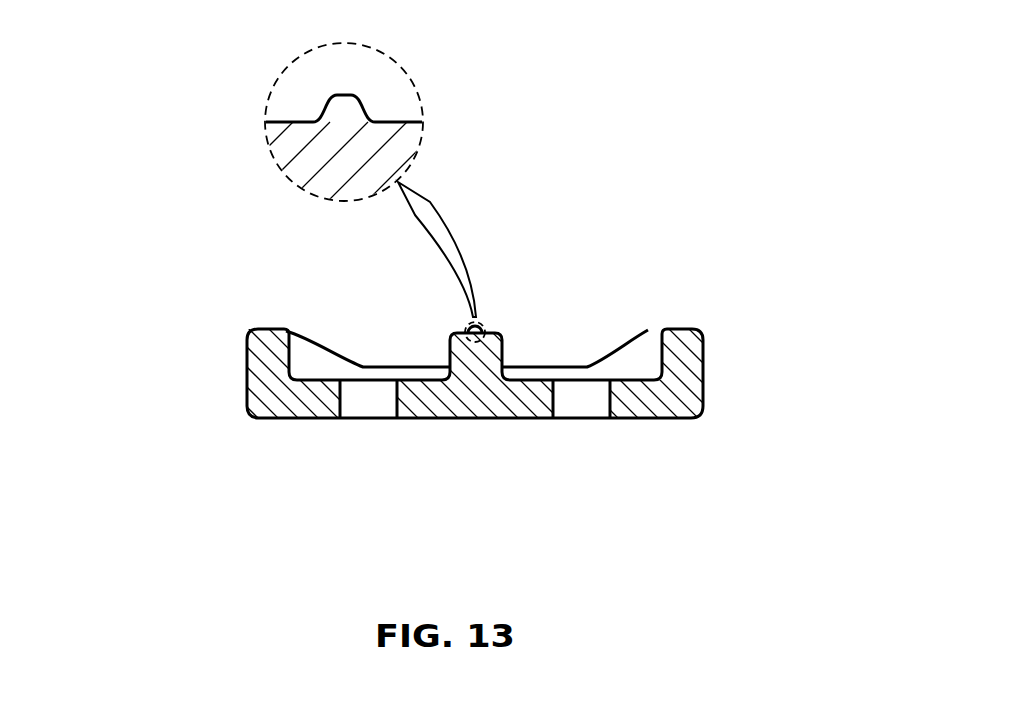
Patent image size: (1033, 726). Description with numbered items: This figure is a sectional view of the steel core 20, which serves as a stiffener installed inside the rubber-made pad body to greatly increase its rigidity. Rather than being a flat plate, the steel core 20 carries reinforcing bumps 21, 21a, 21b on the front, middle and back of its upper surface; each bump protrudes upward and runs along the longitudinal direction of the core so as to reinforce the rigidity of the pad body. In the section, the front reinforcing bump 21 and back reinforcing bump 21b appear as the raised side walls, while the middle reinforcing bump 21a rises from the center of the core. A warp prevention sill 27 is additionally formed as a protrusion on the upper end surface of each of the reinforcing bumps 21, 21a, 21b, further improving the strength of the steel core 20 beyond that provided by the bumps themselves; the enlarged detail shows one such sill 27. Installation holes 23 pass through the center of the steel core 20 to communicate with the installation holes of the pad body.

The steel core 20 is at (212, 268).
The reinforcing bump 21 is at (703, 345).
The reinforcing bump 21a is at (502, 340).
The reinforcing bump 21b is at (262, 355).
The installation hole 23 is at (577, 398).
The warp prevention sill 27 is at (343, 107).